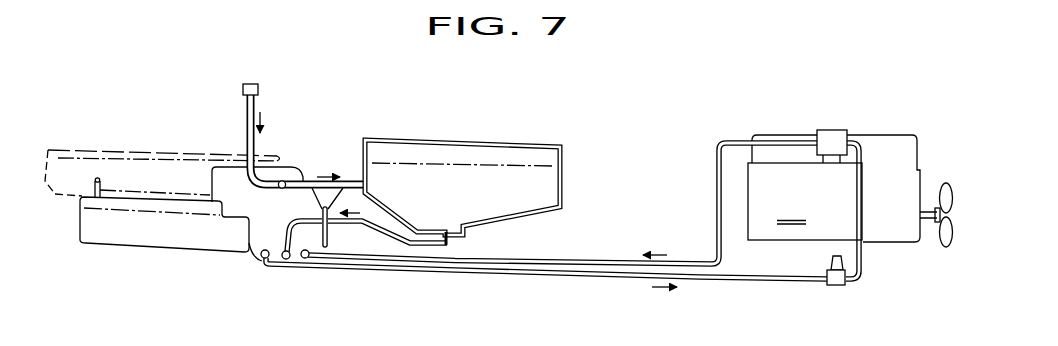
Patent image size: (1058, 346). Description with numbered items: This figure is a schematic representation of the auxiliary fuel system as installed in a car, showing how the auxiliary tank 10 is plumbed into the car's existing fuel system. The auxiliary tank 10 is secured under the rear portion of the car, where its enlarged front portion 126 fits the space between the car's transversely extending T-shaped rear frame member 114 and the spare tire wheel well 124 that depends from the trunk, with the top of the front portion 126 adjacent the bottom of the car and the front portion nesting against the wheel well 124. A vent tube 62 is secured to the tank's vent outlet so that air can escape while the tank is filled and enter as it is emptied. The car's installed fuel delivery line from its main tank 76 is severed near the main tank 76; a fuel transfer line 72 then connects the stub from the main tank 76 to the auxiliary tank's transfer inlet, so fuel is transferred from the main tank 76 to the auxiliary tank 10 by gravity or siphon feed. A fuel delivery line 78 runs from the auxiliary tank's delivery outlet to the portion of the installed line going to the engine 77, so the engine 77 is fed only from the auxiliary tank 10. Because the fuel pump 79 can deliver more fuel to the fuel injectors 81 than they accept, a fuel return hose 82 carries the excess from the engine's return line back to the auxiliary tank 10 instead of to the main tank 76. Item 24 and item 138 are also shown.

The auxiliary tank 10 is at (174, 205).
The oil fill pipe 24 is at (246, 117).
The vent tube 62 is at (100, 179).
The fuel transfer line 72 is at (382, 226).
The main tank 76 is at (562, 181).
The engine 77 is at (805, 201).
The fuel delivery line 78 is at (523, 276).
The fuel pump 79 is at (835, 280).
The fuel injectors 81 is at (830, 131).
The fuel return hose 82 is at (555, 257).
The rear frame member 114 is at (343, 189).
The spare tire wheel well 124 is at (77, 156).
The enlarged front portion 126 is at (244, 204).
The oil supply conduit 138 is at (297, 181).